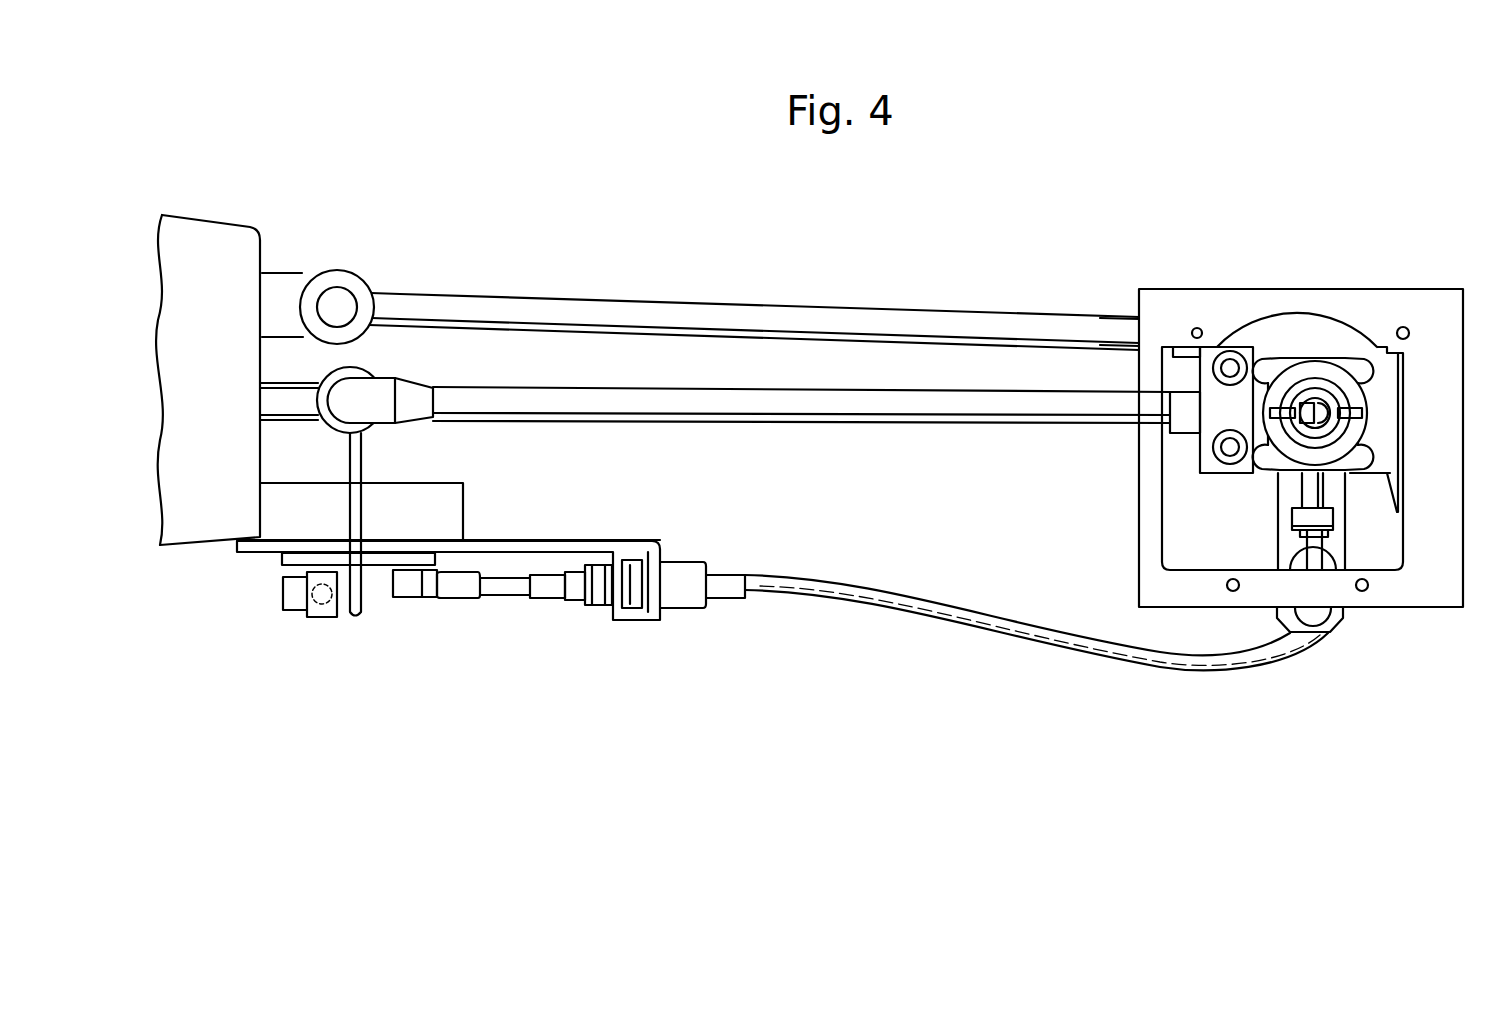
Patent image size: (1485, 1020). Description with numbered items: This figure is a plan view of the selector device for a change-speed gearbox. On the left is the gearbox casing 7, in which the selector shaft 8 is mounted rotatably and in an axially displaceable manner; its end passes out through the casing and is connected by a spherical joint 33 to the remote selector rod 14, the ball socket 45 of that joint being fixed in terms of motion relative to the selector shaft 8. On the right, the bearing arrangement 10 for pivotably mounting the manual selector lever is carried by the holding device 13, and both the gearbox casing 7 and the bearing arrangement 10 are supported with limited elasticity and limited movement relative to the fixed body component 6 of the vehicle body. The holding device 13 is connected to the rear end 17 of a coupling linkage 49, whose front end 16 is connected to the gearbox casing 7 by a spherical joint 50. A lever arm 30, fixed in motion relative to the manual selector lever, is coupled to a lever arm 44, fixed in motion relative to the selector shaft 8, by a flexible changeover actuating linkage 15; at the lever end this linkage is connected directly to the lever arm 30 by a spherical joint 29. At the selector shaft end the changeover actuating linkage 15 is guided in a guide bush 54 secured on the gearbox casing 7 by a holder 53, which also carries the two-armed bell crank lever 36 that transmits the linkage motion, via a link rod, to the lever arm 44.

The fixed body component 6 is at (1430, 289).
The gearbox casing 7 is at (197, 214).
The selector shaft 8 is at (262, 398).
The bearing arrangement 10 is at (1316, 360).
The holding device 13 is at (1190, 369).
The remote selector rod 14 is at (871, 428).
The flexible changeover actuating linkage 15 is at (958, 619).
The front end 16 is at (387, 303).
The rear end 17 is at (1127, 328).
The spherical joint 29 is at (1346, 529).
The lever arm 30 is at (1310, 488).
The spherical joint 33 is at (394, 438).
The two-armed bell crank lever 36 is at (381, 560).
The lever arm 44 is at (350, 503).
The ball socket 45 is at (368, 368).
The coupling linkage 49 is at (841, 303).
The spherical joint 50 is at (340, 268).
The holder 53 is at (593, 542).
The guide bush 54 is at (690, 616).